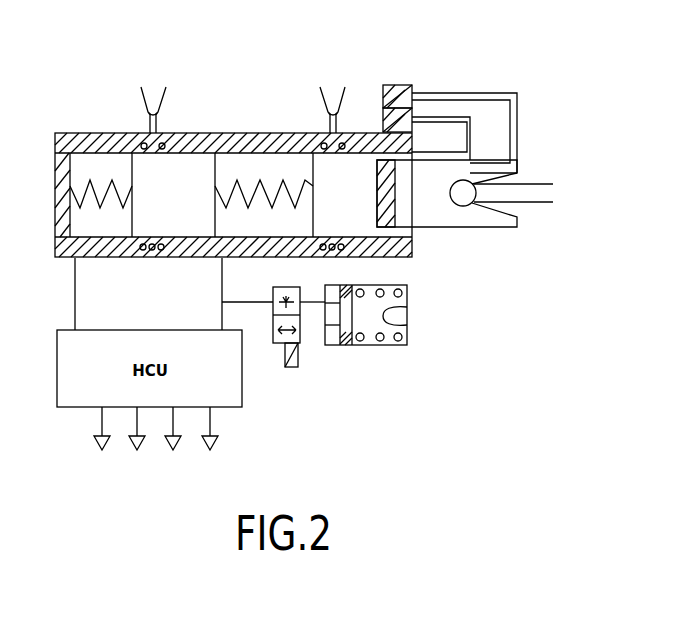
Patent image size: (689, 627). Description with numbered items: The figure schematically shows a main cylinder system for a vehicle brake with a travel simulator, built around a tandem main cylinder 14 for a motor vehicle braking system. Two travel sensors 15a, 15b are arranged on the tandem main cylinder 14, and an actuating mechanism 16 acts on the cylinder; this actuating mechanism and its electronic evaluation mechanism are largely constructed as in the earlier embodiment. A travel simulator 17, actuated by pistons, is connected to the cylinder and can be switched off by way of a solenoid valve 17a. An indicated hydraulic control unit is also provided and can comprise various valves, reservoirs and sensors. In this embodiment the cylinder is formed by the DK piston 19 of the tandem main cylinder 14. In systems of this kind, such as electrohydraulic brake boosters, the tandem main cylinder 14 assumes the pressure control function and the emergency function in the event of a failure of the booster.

The tandem main cylinder 14 is at (218, 130).
The travel sensor 15a is at (398, 85).
The travel sensor 15b is at (382, 120).
The actuating mechanism 16 is at (462, 242).
The travel simulator 17 is at (330, 347).
The solenoid valve 17a is at (303, 317).
The DK piston 19 is at (348, 205).